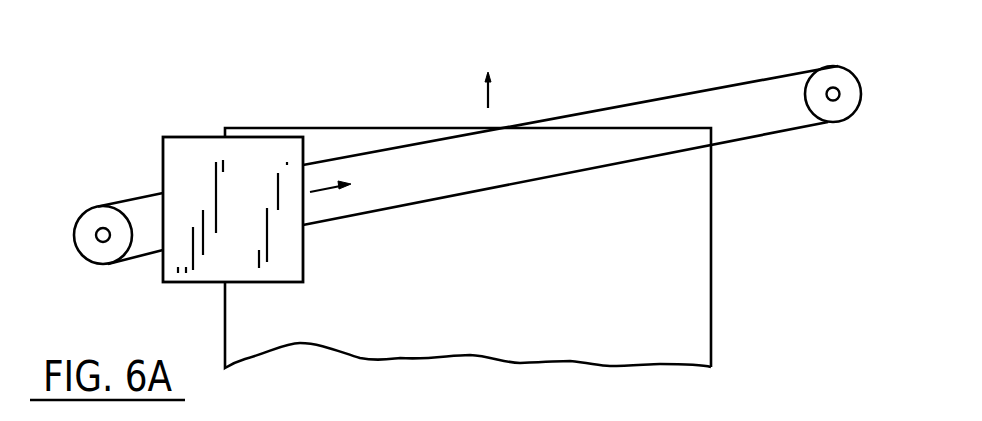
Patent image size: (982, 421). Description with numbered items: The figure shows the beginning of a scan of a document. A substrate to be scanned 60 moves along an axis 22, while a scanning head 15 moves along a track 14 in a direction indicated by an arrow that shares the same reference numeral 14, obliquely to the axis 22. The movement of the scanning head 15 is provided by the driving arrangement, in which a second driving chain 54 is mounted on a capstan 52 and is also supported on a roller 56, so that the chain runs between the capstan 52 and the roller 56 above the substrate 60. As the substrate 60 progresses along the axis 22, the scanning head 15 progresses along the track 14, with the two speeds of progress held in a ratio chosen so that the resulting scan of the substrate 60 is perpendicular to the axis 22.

The track 14 is at (332, 189).
The scanning head 15 is at (258, 156).
The axis 22 is at (492, 98).
The capstan 52 is at (822, 82).
The second driving chain 54 is at (715, 83).
The roller 56 is at (93, 220).
The substrate to be scanned 60 is at (345, 142).